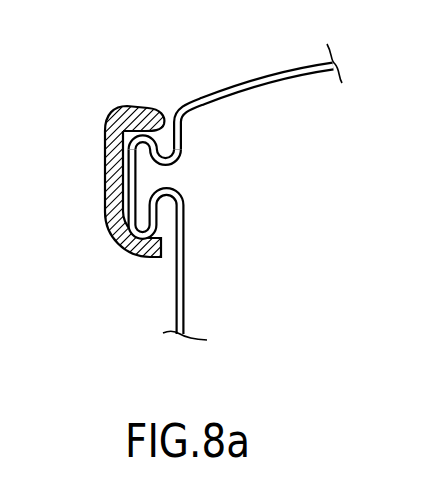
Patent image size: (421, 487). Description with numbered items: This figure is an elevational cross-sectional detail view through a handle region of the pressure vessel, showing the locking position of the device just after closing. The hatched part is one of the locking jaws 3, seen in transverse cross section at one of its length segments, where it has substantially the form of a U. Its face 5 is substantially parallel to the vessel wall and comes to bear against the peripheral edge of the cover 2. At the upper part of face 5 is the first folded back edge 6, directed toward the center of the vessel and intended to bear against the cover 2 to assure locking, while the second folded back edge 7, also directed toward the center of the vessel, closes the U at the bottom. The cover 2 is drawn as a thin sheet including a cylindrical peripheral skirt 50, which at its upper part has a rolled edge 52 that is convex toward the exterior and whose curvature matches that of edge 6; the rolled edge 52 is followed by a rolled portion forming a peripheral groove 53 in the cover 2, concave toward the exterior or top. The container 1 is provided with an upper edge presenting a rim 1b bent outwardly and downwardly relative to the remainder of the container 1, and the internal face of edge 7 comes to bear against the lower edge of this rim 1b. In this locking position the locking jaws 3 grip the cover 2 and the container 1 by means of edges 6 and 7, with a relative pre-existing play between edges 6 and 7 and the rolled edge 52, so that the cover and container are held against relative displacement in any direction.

The container 1 is at (185, 294).
The rim 1b is at (184, 203).
The cover 2 is at (277, 79).
The locking jaws 3 is at (98, 208).
The face 5 is at (105, 182).
The cylindrical peripheral skirt 50 is at (105, 138).
The rolled edge 52 is at (130, 105).
The peripheral groove 53 is at (181, 147).
The first folded back edge 6 is at (151, 108).
The second folded back edge 7 is at (141, 259).